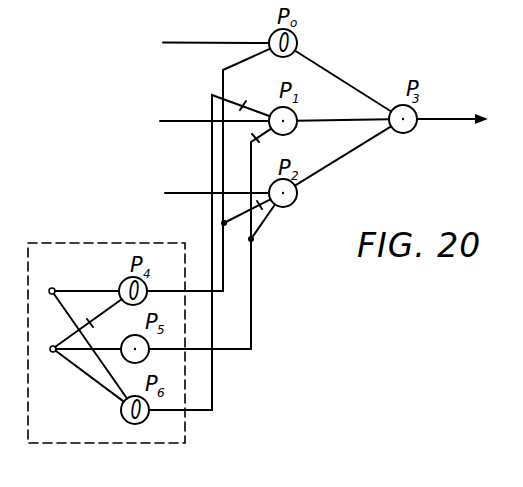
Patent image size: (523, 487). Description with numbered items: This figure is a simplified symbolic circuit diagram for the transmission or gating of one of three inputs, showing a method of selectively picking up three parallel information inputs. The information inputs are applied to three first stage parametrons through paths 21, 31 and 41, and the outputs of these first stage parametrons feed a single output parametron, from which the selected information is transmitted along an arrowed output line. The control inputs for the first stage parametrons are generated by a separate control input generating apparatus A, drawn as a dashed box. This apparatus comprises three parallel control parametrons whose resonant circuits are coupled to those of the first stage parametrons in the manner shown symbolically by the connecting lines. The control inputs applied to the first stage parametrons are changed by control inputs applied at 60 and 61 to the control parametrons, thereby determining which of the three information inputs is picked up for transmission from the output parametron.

The path 21 is at (166, 42).
The path 31 is at (164, 121).
The path 41 is at (166, 193).
The control input 60 is at (53, 288).
The control input 61 is at (52, 352).
The control input generating apparatus A is at (186, 443).